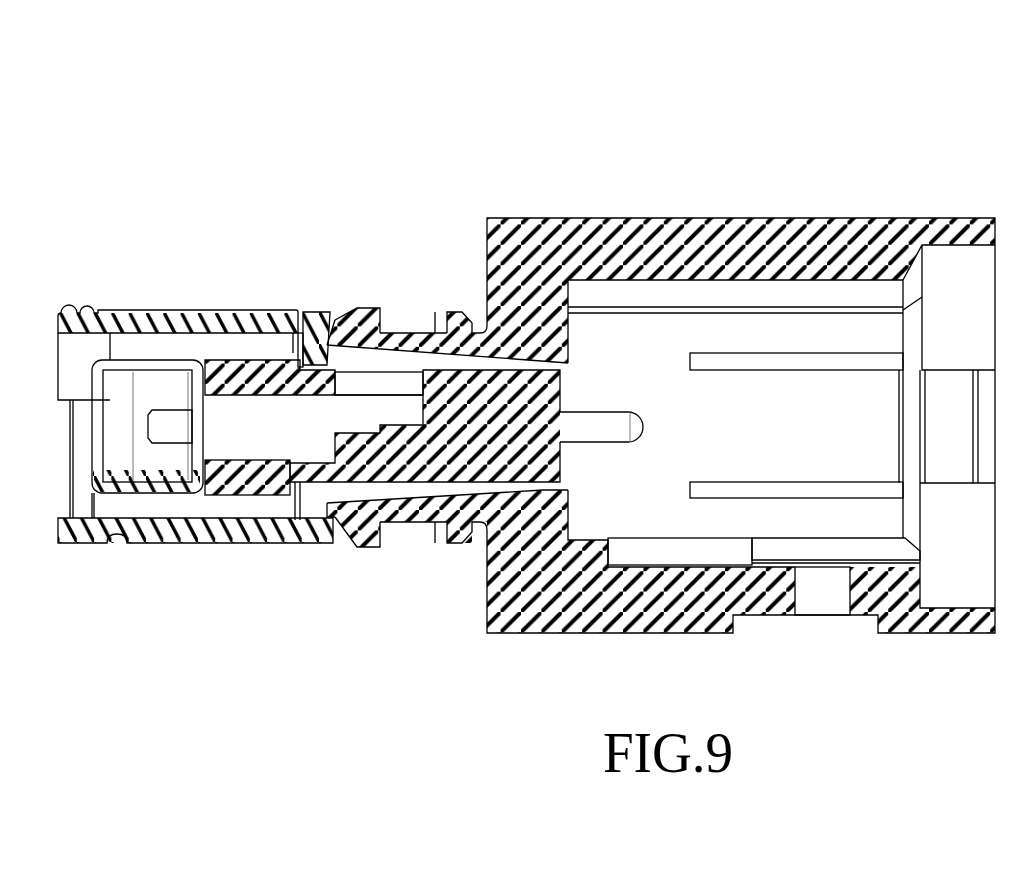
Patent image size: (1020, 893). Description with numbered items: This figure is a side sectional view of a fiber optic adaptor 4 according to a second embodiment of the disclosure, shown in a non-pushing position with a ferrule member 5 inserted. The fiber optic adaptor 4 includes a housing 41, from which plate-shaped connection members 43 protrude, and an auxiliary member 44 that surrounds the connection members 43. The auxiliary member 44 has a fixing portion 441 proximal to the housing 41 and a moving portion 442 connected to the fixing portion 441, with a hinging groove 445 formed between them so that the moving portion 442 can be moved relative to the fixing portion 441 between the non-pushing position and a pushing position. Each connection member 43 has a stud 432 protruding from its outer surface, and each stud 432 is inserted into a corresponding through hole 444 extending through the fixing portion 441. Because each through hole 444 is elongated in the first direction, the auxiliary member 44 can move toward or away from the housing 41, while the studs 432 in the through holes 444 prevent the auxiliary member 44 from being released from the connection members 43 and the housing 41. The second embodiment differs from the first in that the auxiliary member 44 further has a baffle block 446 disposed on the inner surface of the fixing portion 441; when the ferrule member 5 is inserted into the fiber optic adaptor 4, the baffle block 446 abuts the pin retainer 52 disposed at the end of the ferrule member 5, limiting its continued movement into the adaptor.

The fiber optic adaptor 4 is at (802, 157).
The housing 41 is at (645, 218).
The connection member 43 is at (413, 332).
The stud 432 is at (352, 312).
The fixing portion 441 is at (452, 312).
The moving portion 442 is at (147, 308).
The through hole 444 is at (395, 313).
The hinging groove 445 is at (297, 313).
The baffle block 446 is at (305, 355).
The auxiliary member 44 is at (117, 303).
The ferrule member 5 is at (240, 513).
The pin retainer 52 is at (228, 363).